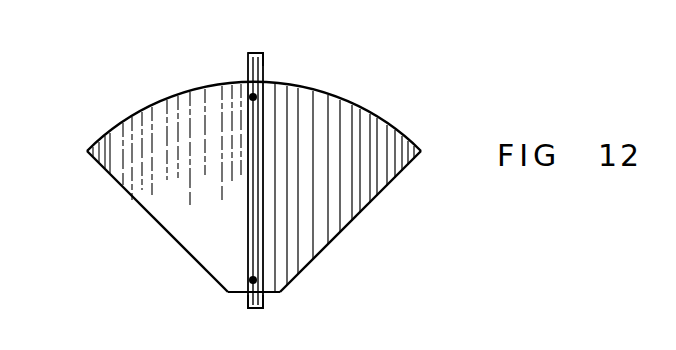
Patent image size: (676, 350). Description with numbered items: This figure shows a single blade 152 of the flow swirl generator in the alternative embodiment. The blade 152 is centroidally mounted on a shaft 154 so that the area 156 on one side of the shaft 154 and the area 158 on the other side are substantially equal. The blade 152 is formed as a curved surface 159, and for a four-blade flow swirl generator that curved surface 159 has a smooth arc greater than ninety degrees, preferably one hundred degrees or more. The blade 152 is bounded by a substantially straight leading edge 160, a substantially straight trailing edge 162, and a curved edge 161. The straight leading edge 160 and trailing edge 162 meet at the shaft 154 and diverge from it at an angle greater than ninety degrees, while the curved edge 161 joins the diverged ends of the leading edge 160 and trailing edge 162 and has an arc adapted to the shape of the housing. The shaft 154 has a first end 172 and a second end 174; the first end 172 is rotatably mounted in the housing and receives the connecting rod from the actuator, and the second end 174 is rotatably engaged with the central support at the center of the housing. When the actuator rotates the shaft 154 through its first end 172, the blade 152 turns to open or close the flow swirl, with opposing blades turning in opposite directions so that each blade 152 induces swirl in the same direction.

The blade 152 is at (424, 256).
The shaft 154 is at (262, 114).
The area on one side of the shaft 156 is at (393, 140).
The area on other side of the shaft 158 is at (153, 132).
The curved surface 159 is at (232, 108).
The leading edge 160 is at (138, 202).
The curved edge 161 is at (104, 131).
The trailing edge 162 is at (352, 225).
The first end of the shaft 172 is at (257, 52).
The second end of the shaft 174 is at (252, 308).